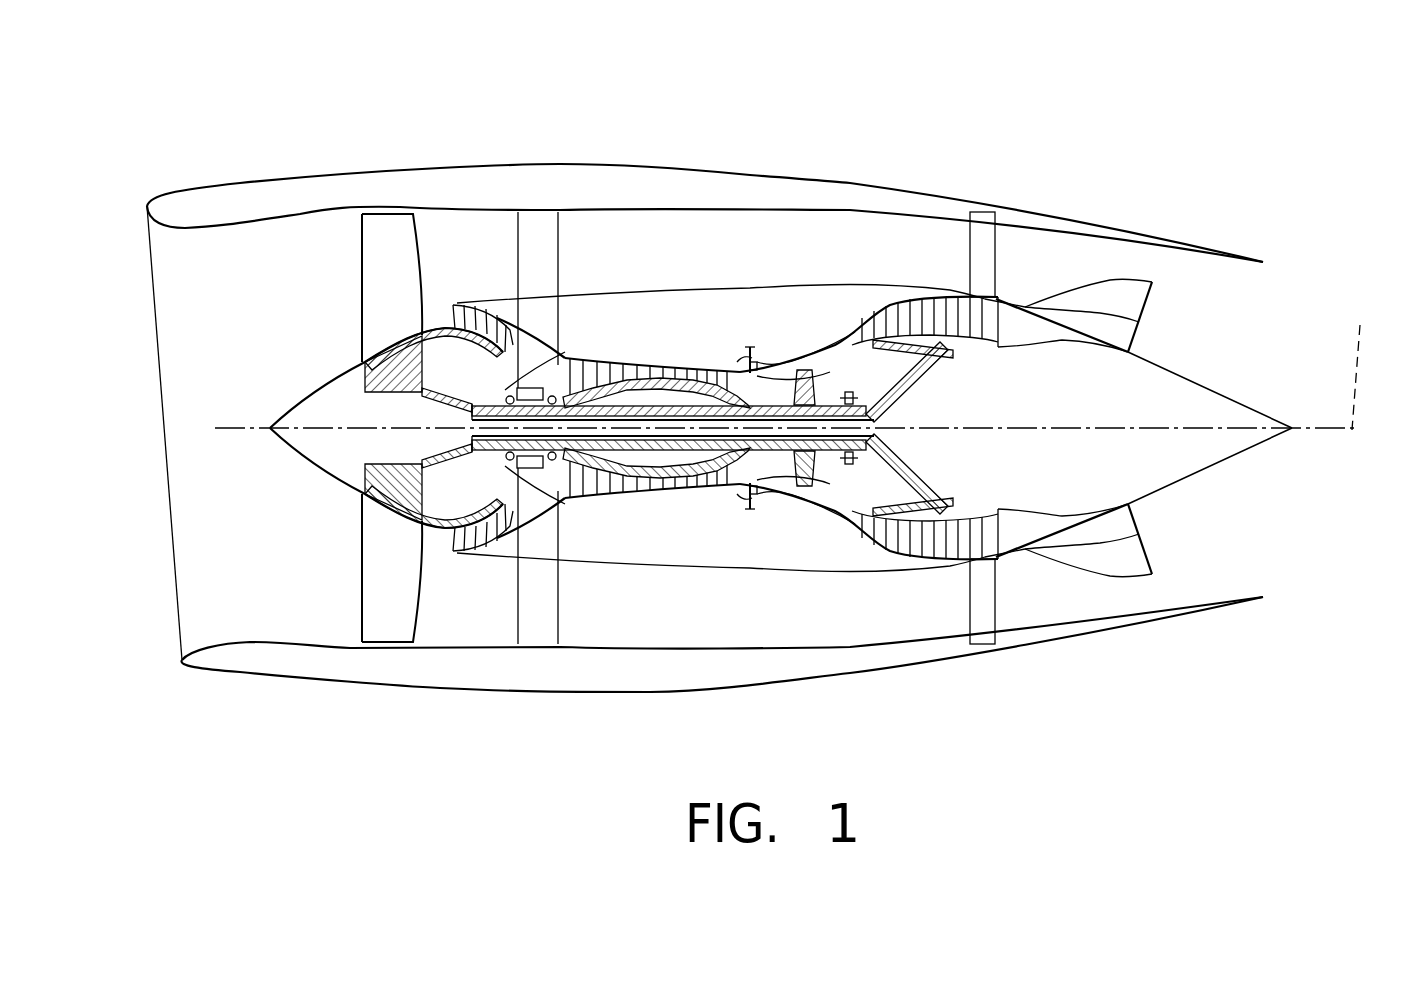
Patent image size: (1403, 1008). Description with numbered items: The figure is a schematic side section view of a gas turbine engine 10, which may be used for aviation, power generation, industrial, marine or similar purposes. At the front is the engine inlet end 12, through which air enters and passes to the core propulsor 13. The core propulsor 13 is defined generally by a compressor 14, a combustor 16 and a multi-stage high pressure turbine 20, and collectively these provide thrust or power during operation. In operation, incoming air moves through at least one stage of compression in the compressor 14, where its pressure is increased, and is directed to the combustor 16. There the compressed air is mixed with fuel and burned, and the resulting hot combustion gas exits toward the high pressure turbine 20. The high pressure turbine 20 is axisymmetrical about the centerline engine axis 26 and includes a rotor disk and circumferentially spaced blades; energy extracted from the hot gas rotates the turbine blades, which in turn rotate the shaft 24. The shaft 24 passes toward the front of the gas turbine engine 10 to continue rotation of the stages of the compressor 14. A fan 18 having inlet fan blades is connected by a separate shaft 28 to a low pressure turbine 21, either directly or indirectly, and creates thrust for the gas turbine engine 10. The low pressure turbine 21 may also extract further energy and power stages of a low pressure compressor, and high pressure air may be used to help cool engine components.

The gas turbine engine 10 is at (1012, 148).
The engine inlet end 12 is at (160, 258).
The core propulsor 13 is at (730, 262).
The compressor 14 is at (600, 357).
The combustor 16 is at (768, 350).
The fan 18 is at (338, 295).
The multi-stage high pressure turbine 20 is at (822, 340).
The low pressure turbine 21 is at (940, 500).
The shaft 24 is at (742, 493).
The centerline engine axis 26 is at (1358, 325).
The shaft 28 is at (652, 455).